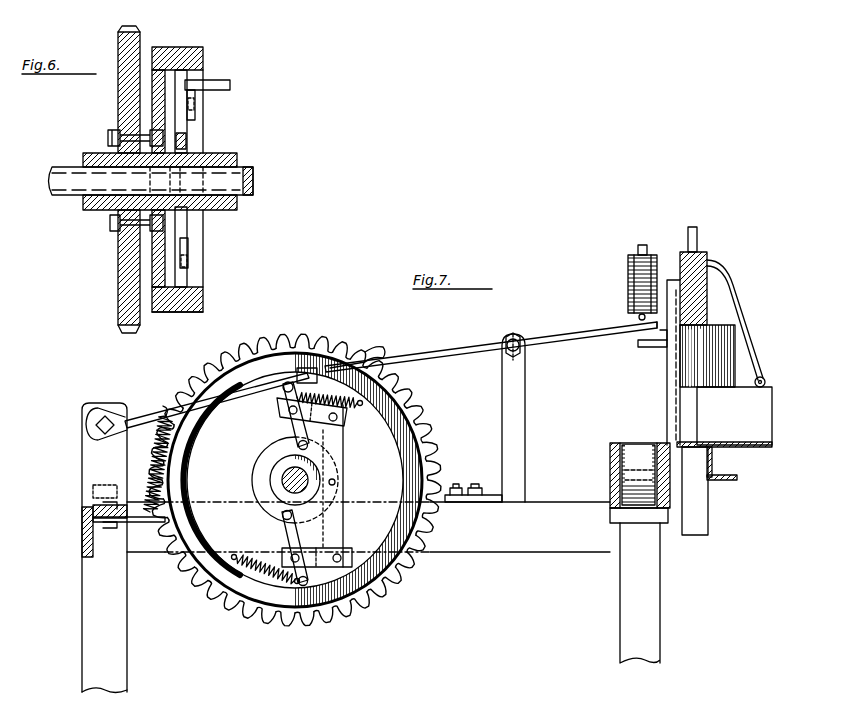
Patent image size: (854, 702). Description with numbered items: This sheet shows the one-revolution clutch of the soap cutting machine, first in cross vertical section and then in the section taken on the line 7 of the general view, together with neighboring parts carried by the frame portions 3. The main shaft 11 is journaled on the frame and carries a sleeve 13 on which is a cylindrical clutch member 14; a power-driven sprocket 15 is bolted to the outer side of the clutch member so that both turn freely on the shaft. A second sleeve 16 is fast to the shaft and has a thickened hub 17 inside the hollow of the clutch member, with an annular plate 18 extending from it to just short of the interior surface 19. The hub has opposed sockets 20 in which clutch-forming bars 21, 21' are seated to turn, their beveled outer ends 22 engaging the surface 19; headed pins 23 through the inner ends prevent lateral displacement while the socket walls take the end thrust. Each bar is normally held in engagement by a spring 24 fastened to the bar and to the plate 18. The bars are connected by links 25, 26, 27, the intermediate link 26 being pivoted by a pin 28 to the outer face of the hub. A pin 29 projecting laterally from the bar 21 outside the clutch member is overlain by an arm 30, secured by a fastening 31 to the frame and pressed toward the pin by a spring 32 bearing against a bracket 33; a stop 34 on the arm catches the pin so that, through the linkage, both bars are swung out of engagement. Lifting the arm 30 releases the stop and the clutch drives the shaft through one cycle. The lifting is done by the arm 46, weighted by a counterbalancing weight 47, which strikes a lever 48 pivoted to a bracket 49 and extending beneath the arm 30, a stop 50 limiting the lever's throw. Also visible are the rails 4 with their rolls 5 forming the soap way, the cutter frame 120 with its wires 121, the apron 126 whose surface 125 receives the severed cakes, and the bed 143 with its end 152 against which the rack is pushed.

In FIG. 7, the frame portions 3 is at (375, 548).
In FIG. 7, the rails 4 is at (610, 462).
In FIG. 7, the rolls 5 is at (640, 442).
In FIG. 7, the section line 7 is at (655, 505).
In FIG. 6, the main shaft 11 is at (66, 196).
In FIG. 7, the main shaft 11 is at (290, 481).
In FIG. 6, the sleeve 13 is at (93, 211).
In FIG. 6, the clutch member 14 is at (178, 312).
In FIG. 7, the clutch member 14 is at (285, 360).
In FIG. 6, the power-driven sprocket 15 is at (118, 292).
In FIG. 7, the power-driven sprocket 15 is at (295, 483).
In FIG. 6, the sleeve 16 is at (222, 200).
In FIG. 7, the hub 17 is at (258, 488).
In FIG. 6, the annular plate 18 is at (190, 281).
In FIG. 7, the annular plate 18 is at (252, 430).
In FIG. 6, the interior surface 19 is at (205, 288).
In FIG. 7, the interior surface 19 is at (222, 560).
In FIG. 7, the sockets 20 is at (298, 443).
In FIG. 6, the clutch-forming bar 21 is at (219, 104).
In FIG. 7, the clutch-forming bar 21 is at (276, 414).
In FIG. 6, the clutch-forming bar 21' is at (207, 253).
In FIG. 7, the clutch-forming bar 21' is at (272, 548).
In FIG. 7, the outer ends 22 is at (302, 590).
In FIG. 7, the headed pins 23 is at (262, 456).
In FIG. 7, the spring 24 is at (362, 400).
In FIG. 6, the link 25 is at (193, 108).
In FIG. 7, the link 25 is at (326, 422).
In FIG. 6, the intermediate connecting link 26 is at (190, 128).
In FIG. 7, the intermediate connecting link 26 is at (345, 467).
In FIG. 6, the link 27 is at (188, 267).
In FIG. 7, the link 27 is at (348, 546).
In FIG. 7, the pin 28 is at (336, 482).
In FIG. 6, the pin 29 is at (242, 78).
In FIG. 7, the pin 29 is at (303, 370).
In FIG. 7, the arm 30 is at (233, 392).
In FIG. 7, the fastening 31 is at (90, 425).
In FIG. 7, the spring 32 is at (140, 458).
In FIG. 7, the bracket 33 is at (123, 521).
In FIG. 7, the stop 34 is at (357, 352).
In FIG. 7, the arm 46 is at (627, 332).
In FIG. 7, the counterbalancing weight 47 is at (628, 291).
In FIG. 7, the lever 48 is at (546, 346).
In FIG. 7, the bracket 49 is at (512, 392).
In FIG. 7, the stop 50 is at (648, 347).
In FIG. 7, the rectangular frame 120 is at (704, 257).
In FIG. 7, the wires 121 is at (670, 392).
In FIG. 7, the surface 125 is at (768, 420).
In FIG. 7, the apron 126 is at (772, 397).
In FIG. 7, the bed 143 is at (734, 481).
In FIG. 7, the end 152 is at (715, 462).